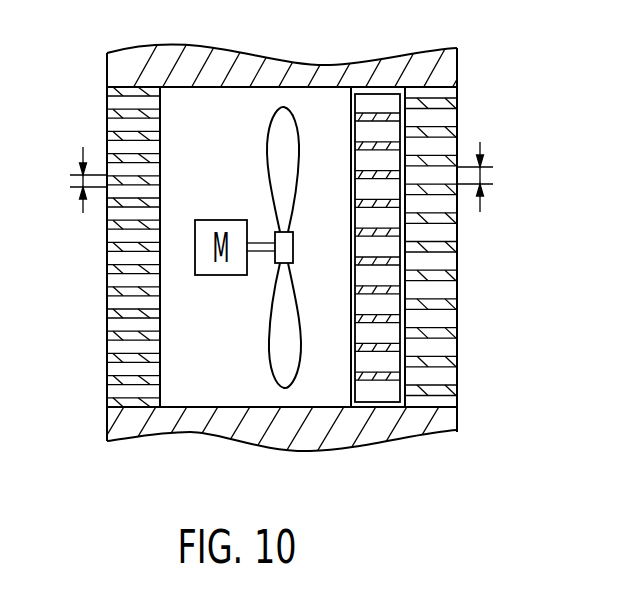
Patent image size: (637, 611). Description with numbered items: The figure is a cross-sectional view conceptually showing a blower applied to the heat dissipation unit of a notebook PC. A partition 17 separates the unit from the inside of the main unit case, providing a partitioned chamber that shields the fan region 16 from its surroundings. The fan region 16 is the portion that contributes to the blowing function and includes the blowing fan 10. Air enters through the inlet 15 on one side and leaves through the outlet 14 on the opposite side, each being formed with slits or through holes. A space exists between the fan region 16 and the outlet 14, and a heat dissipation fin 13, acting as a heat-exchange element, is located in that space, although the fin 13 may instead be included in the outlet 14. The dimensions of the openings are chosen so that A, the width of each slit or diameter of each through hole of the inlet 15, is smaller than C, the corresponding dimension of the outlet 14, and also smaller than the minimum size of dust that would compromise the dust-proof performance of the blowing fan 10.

The blowing fan 10 is at (288, 128).
The heat dissipation fin 13 is at (378, 105).
The outlet 14 is at (458, 317).
The inlet 15 is at (107, 318).
The fan region 16 is at (228, 372).
The partition 17 is at (327, 428).
The width of each slit or diameter of each through hole of the inlet A is at (83, 181).
The width of each slit or diameter of each through hole of the outlet C is at (493, 177).